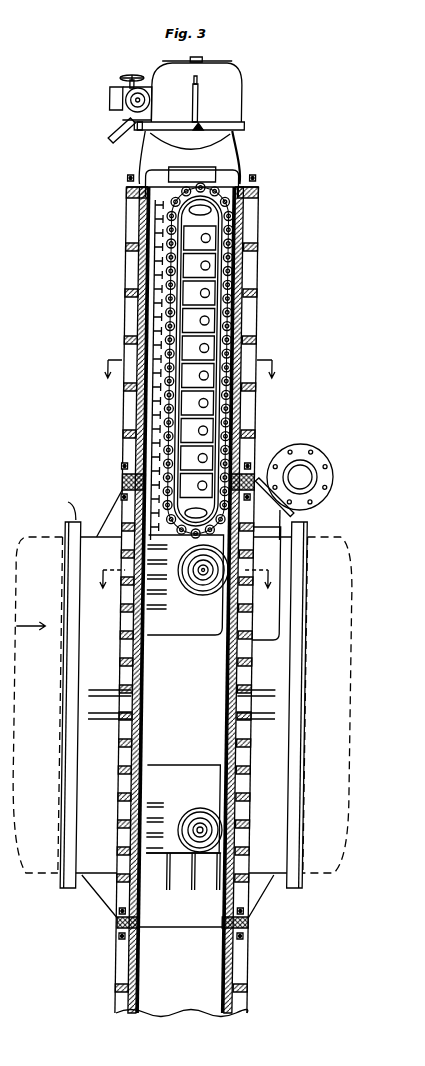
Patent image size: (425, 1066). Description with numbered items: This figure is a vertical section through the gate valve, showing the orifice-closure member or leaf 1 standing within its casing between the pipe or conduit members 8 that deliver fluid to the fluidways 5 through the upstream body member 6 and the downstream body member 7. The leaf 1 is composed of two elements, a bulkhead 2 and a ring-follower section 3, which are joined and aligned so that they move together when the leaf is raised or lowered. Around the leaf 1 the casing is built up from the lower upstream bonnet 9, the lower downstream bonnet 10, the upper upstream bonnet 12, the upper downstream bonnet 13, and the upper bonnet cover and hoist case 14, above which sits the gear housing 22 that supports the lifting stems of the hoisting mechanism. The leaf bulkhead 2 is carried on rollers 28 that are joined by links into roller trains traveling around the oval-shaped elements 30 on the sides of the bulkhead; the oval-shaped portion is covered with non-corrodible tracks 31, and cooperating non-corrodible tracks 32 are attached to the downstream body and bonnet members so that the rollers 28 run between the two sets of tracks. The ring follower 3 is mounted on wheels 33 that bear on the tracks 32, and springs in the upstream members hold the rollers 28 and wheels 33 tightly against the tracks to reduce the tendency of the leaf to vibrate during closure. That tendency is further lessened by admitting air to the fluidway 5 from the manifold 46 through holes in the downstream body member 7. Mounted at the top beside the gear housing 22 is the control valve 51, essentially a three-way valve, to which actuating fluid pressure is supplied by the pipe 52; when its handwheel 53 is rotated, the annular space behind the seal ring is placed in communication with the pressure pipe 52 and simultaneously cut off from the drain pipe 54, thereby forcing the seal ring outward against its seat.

The orifice-closure member or leaf 1 is at (174, 525).
The bulkhead 2 is at (150, 215).
The ring-follower section 3 is at (178, 890).
The fluidways 5 is at (188, 359).
The upstream body member 6 is at (165, 540).
The downstream body member 7 is at (278, 898).
The pipe or conduit members 8 is at (28, 537).
The lower upstream bonnet 9 is at (127, 996).
The lower downstream bonnet 10 is at (258, 978).
The upper upstream bonnet 12 is at (126, 310).
The upper downstream bonnet 13 is at (258, 283).
The upper bonnet cover and hoist case 14 is at (240, 160).
The gear housing 22 is at (230, 95).
The rollers 28 is at (230, 238).
The oval-shaped elements 30 is at (212, 322).
The non-corrodible tracks 31 is at (201, 267).
The non-corrodible tracks 32 is at (237, 262).
The wheels 33 is at (196, 590).
The manifold 46 is at (318, 447).
The control valve 51 is at (108, 97).
The pipe 52 is at (107, 140).
The handwheel 53 is at (122, 75).
The drain pipe 54 is at (133, 125).